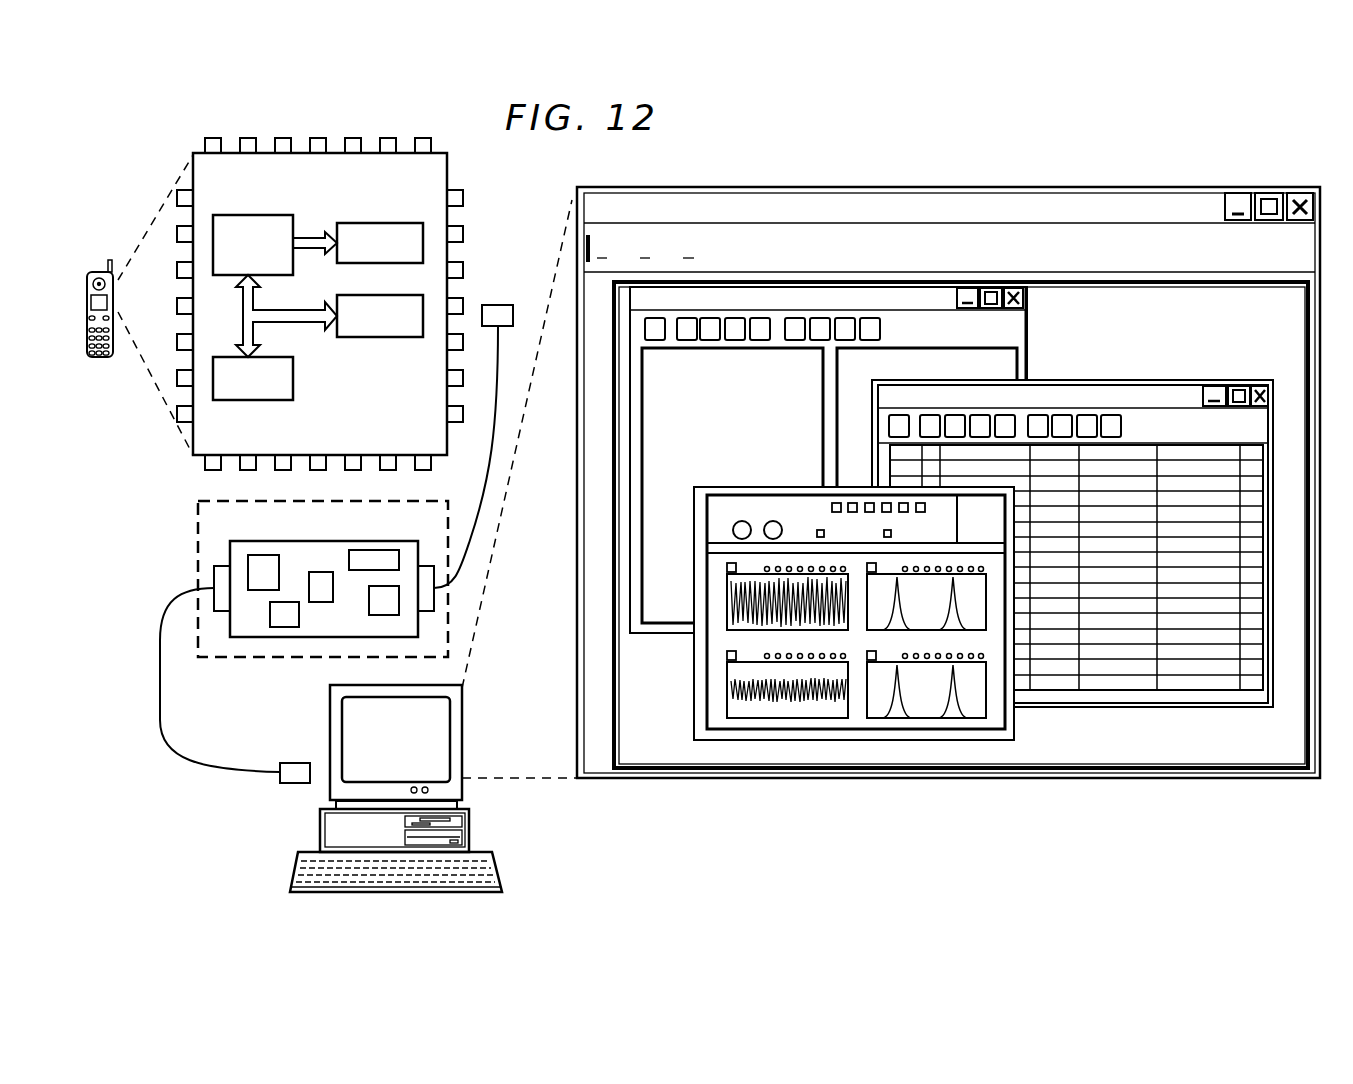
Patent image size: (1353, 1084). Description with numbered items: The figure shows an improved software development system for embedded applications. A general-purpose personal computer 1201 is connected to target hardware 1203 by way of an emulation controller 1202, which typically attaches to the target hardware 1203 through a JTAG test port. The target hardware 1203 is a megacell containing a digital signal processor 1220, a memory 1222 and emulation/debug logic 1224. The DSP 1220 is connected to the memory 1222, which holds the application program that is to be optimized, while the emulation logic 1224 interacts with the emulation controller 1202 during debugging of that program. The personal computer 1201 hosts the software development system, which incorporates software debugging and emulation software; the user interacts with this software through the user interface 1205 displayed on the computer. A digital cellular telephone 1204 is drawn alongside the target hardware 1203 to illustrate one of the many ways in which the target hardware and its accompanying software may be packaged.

The general-purpose personal computer 1201 is at (320, 828).
The emulation controller 1202 is at (277, 657).
The target hardware 1203 is at (320, 288).
The digital cellular telephone 1204 is at (101, 357).
The user interface 1205 is at (976, 778).
The digital signal processor (DSP) 1220 is at (250, 215).
The memory 1222 is at (375, 223).
The emulation/debug logic 1224 is at (257, 400).